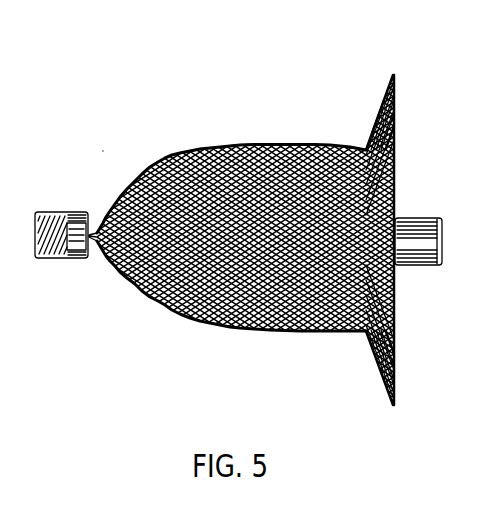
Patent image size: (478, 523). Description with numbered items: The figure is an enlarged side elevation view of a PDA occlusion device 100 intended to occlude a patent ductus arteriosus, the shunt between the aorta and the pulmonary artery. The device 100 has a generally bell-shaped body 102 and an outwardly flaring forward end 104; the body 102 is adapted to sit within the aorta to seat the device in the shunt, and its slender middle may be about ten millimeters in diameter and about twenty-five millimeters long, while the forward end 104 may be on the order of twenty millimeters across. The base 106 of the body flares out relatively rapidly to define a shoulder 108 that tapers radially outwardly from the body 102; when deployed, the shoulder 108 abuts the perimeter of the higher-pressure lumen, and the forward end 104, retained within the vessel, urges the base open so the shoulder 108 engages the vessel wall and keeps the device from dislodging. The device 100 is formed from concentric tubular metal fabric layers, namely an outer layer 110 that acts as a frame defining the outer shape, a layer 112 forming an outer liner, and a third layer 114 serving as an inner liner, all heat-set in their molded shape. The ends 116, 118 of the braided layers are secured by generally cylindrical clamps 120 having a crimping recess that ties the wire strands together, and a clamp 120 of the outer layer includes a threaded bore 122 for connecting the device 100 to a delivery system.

The device 100 is at (172, 62).
The bell-shaped body 102 is at (301, 143).
The forward end 104 is at (394, 79).
The base 106 is at (365, 148).
The shoulder 108 is at (384, 101).
The outer layer 110 is at (157, 161).
The layer 112 is at (199, 147).
The third layer 114 is at (248, 143).
The end 116 is at (397, 266).
The end 118 is at (91, 257).
The clamps 120 is at (47, 212).
The threaded bore 122 is at (35, 237).